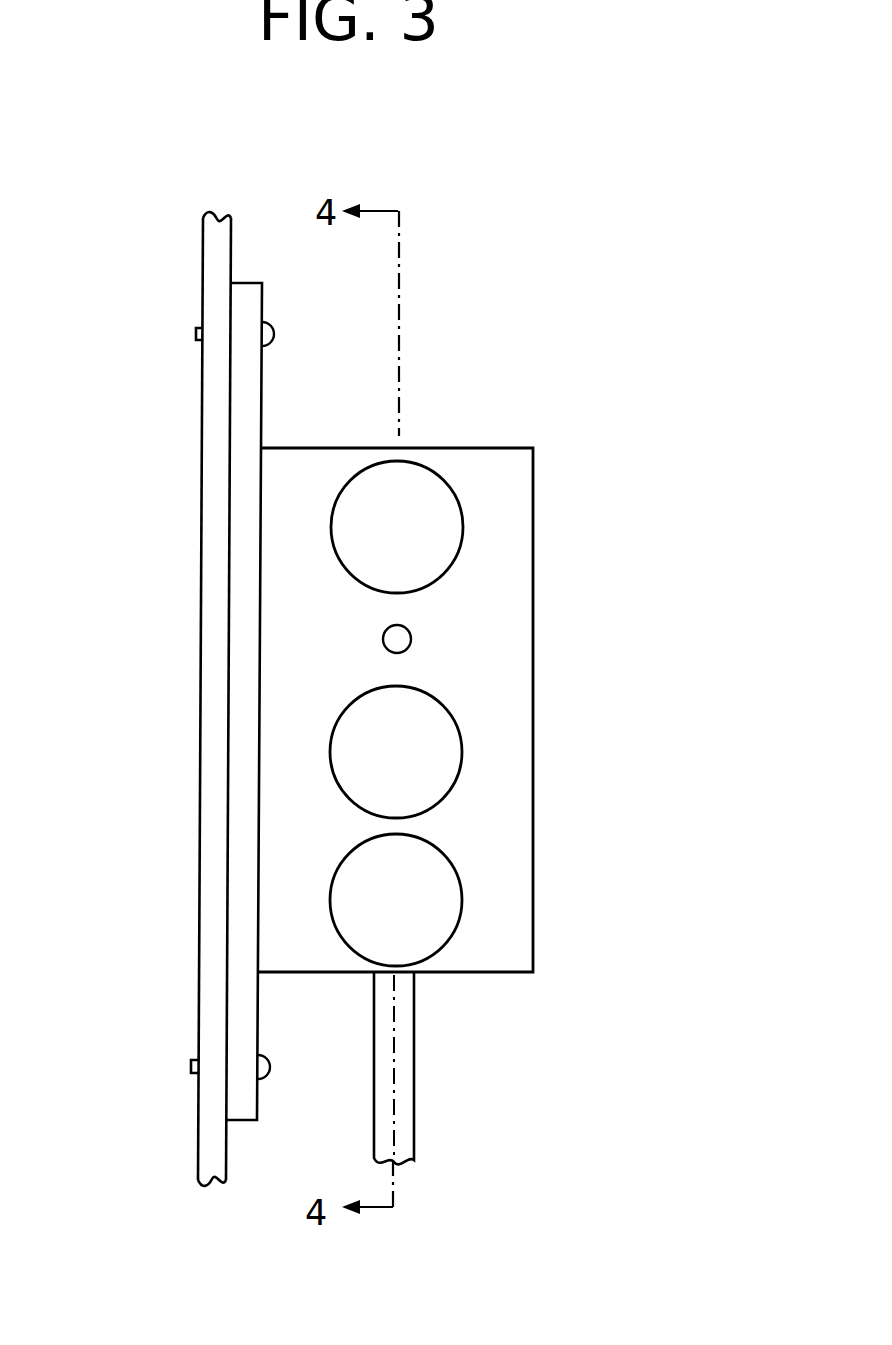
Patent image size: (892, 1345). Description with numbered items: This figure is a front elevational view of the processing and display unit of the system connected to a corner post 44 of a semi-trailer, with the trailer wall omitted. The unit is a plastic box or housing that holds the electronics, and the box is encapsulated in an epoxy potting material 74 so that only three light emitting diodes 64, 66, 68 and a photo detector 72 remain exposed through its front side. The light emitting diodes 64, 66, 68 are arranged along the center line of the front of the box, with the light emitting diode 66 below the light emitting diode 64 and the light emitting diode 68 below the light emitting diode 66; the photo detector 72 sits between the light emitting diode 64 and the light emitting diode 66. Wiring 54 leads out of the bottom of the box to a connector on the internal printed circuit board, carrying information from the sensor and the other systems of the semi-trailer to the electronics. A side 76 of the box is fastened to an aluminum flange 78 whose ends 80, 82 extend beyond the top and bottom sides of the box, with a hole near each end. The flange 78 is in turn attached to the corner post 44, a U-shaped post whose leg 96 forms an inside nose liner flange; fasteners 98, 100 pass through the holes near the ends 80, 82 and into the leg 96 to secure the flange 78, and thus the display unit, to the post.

The corner post 44 is at (210, 248).
The end of the flange 80 is at (247, 300).
The fastener 98 is at (272, 337).
The fastener 100 is at (268, 1067).
The flange 78 is at (245, 418).
The leg 96 is at (212, 728).
The end of the flange 82 is at (240, 1108).
The epoxy potting material 74 is at (515, 535).
The side of the box 76 is at (262, 487).
The light emitting diode 64 is at (425, 492).
The photo detector 72 is at (400, 637).
The light emitting diode 66 is at (450, 757).
The light emitting diode 68 is at (447, 900).
The wiring 54 is at (410, 1053).